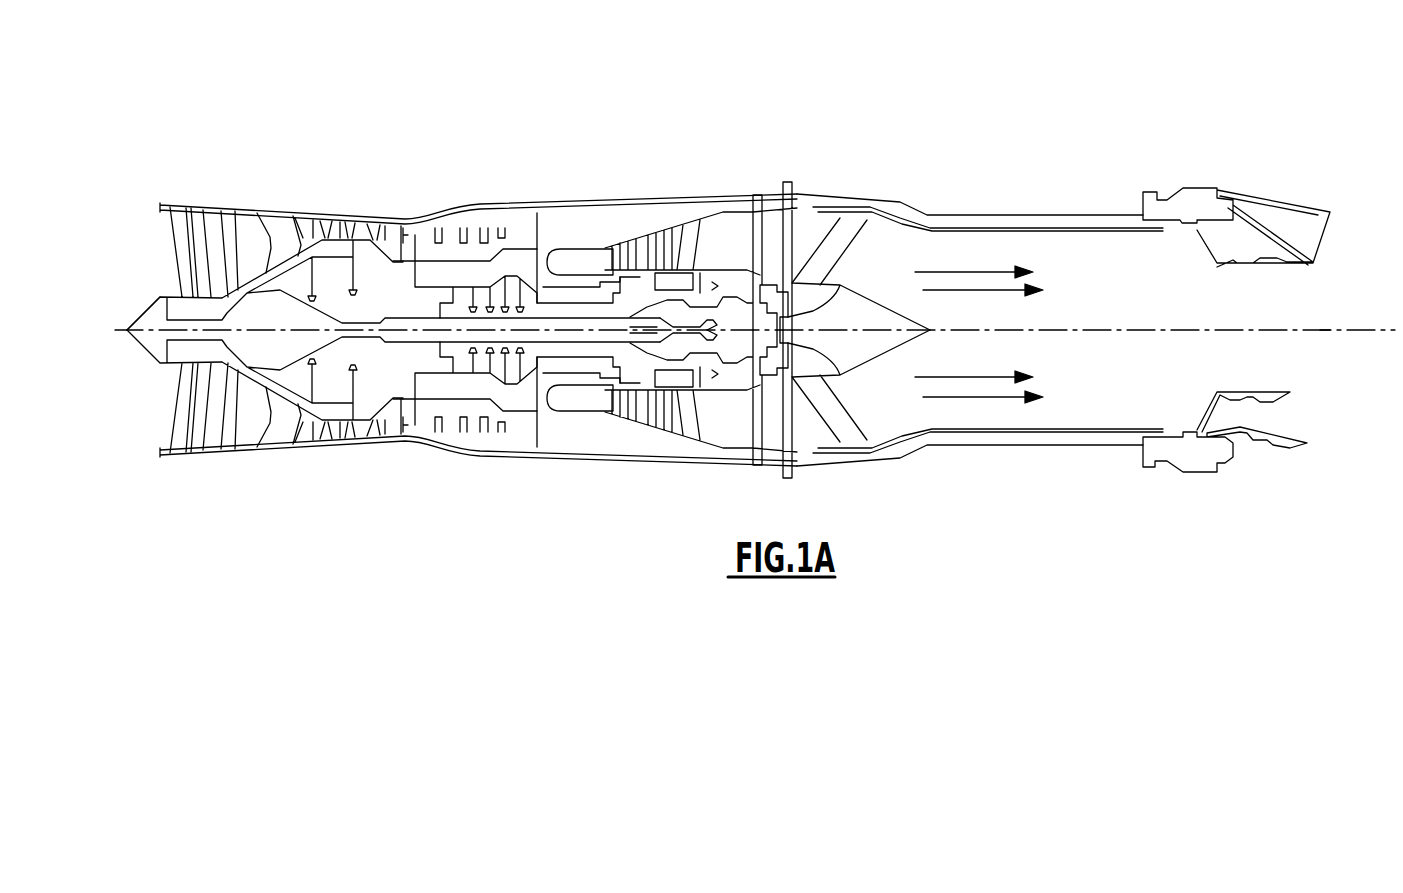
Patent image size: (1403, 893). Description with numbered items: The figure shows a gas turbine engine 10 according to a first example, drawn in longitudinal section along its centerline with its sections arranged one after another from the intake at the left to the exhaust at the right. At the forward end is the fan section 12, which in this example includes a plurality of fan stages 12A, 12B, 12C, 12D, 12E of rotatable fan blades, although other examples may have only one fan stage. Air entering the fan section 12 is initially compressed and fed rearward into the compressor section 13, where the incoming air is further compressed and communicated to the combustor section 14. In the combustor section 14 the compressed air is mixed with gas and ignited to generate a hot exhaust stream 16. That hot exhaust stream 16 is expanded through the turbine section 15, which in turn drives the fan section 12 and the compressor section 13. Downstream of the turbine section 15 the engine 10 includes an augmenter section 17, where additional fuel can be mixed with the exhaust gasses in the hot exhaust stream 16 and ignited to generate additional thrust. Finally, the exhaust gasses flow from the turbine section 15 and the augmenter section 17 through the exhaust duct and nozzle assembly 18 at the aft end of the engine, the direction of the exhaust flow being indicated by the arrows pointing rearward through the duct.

The gas turbine engine 10 is at (911, 85).
The fan section 12 is at (383, 137).
The fan stage 12A is at (277, 218).
The fan stage 12B is at (308, 225).
The fan stage 12C is at (332, 225).
The fan stage 12D is at (368, 232).
The fan stage 12E is at (365, 228).
The compressor section 13 is at (557, 137).
The combustor section 14 is at (642, 137).
The turbine section 15 is at (812, 137).
The hot exhaust stream 16 is at (988, 407).
The augmenter section 17 is at (868, 137).
The exhaust duct and nozzle assembly 18 is at (872, 137).